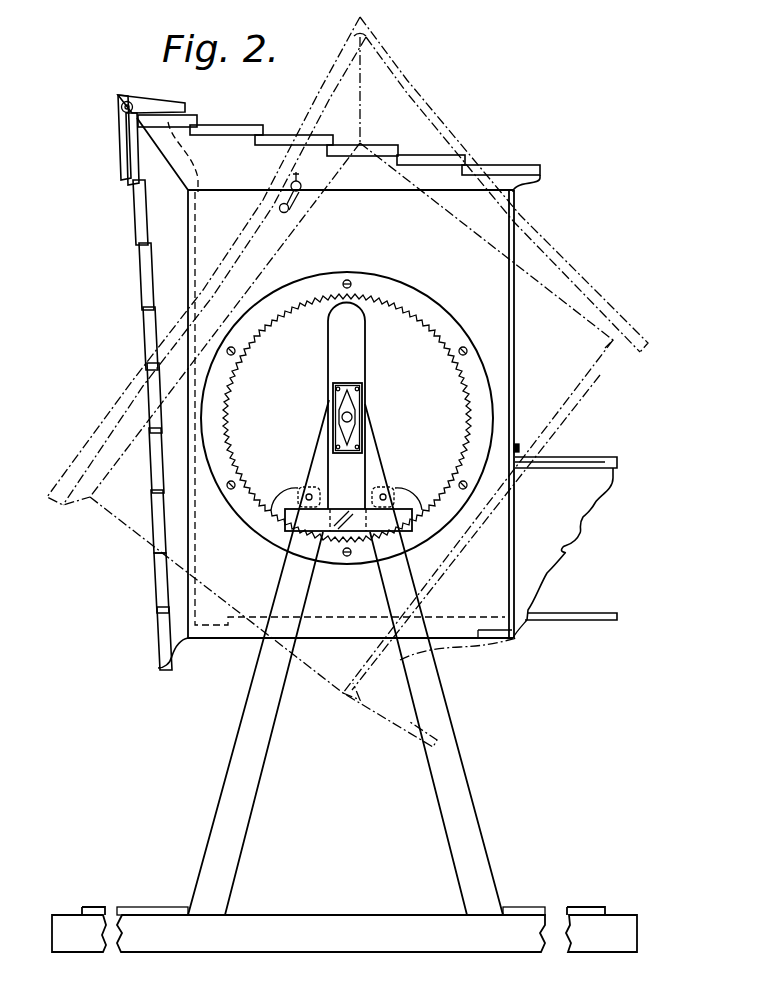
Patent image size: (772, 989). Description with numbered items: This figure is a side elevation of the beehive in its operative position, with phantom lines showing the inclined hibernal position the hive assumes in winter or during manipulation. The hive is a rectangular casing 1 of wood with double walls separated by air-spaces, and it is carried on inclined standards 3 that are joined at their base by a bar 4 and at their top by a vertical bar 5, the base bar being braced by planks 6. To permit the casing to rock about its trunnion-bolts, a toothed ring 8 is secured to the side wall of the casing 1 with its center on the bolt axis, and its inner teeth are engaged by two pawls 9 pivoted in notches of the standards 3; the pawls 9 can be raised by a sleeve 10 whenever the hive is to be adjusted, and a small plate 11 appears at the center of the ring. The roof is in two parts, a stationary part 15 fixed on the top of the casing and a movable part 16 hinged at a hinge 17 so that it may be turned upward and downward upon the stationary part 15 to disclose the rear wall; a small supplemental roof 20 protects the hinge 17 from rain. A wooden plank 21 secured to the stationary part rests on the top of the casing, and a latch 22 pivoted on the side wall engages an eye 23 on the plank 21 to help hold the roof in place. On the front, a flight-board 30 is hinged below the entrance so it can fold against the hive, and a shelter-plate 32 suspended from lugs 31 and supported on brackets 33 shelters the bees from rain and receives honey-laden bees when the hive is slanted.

The rectangular casing 1 is at (516, 360).
The inclined standards 3 is at (345, 657).
The bar 4 is at (344, 929).
The vertical bar 5 is at (346, 406).
The planks 6 is at (140, 912).
The toothed ring 8 is at (222, 415).
The pawls 9 is at (303, 499).
The sleeve 10 is at (290, 527).
The bearing plate 11 is at (338, 414).
The stationary roof part 15 is at (393, 154).
The movable roof part 16 is at (138, 217).
The hinge 17 is at (132, 103).
The supplemental roof 20 is at (198, 100).
The wooden plank 21 is at (235, 141).
The latch 22 is at (302, 193).
The eye 23 is at (298, 178).
The flight-board 30 is at (568, 615).
The lugs 31 is at (517, 445).
The shelter-plate 32 is at (557, 462).
The brackets 33 is at (570, 544).